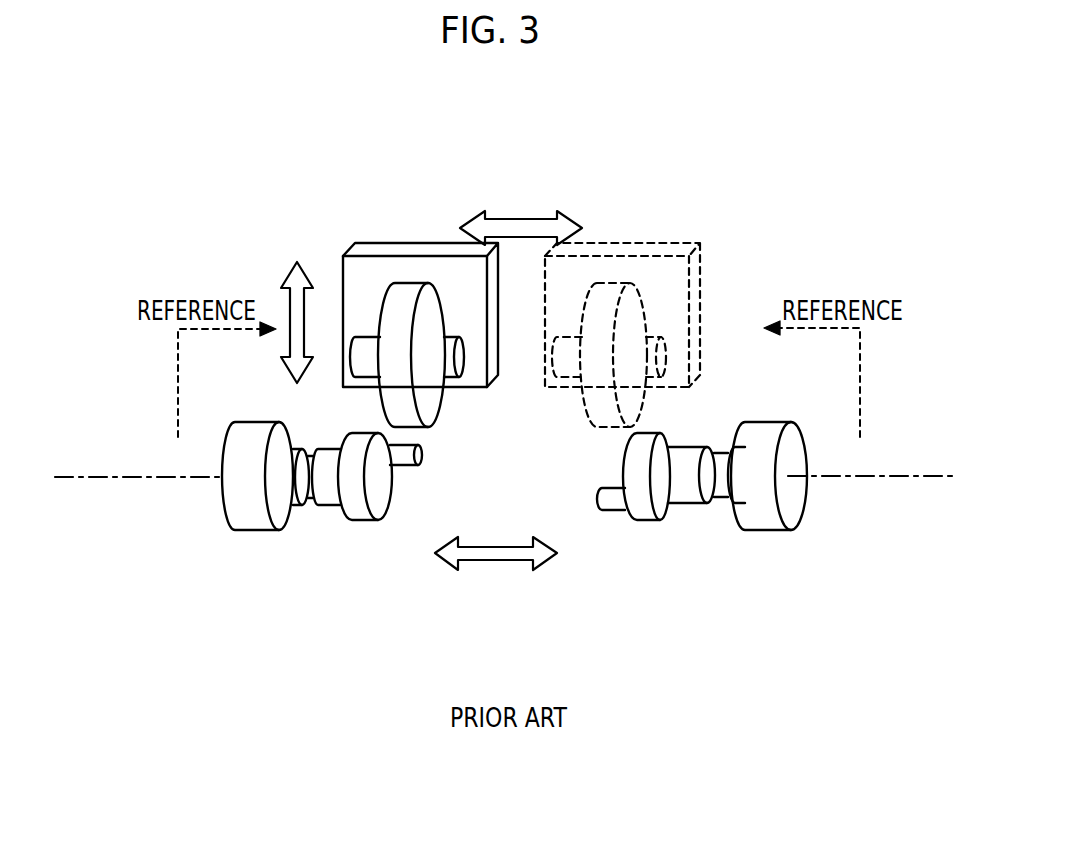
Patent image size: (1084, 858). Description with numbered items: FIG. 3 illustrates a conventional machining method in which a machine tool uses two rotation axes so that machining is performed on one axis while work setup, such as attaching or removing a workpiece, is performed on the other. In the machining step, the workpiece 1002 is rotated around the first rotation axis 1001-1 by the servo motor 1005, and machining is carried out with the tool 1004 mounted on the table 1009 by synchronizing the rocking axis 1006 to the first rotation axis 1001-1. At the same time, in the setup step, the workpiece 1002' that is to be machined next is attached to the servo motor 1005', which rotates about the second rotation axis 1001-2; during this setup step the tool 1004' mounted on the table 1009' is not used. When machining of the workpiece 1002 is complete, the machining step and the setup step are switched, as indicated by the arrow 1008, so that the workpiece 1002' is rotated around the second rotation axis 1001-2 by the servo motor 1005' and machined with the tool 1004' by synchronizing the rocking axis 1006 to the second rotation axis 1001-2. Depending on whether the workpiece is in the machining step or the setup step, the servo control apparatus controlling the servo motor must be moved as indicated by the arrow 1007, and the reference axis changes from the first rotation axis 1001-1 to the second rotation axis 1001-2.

The first rotation axis 1001-1 is at (97, 477).
The second rotation axis 1001-2 is at (877, 476).
The workpiece 1002 is at (342, 518).
The workpiece 1002' is at (671, 527).
The tool 1004 is at (424, 401).
The tool 1004' is at (587, 384).
The servo motor 1005 is at (245, 530).
The servo motor 1005' is at (792, 522).
The rocking axis 1006 is at (290, 305).
The arrow 1007 is at (542, 218).
The arrow 1008 is at (540, 563).
The table 1009 is at (420, 270).
The table 1009' is at (651, 269).